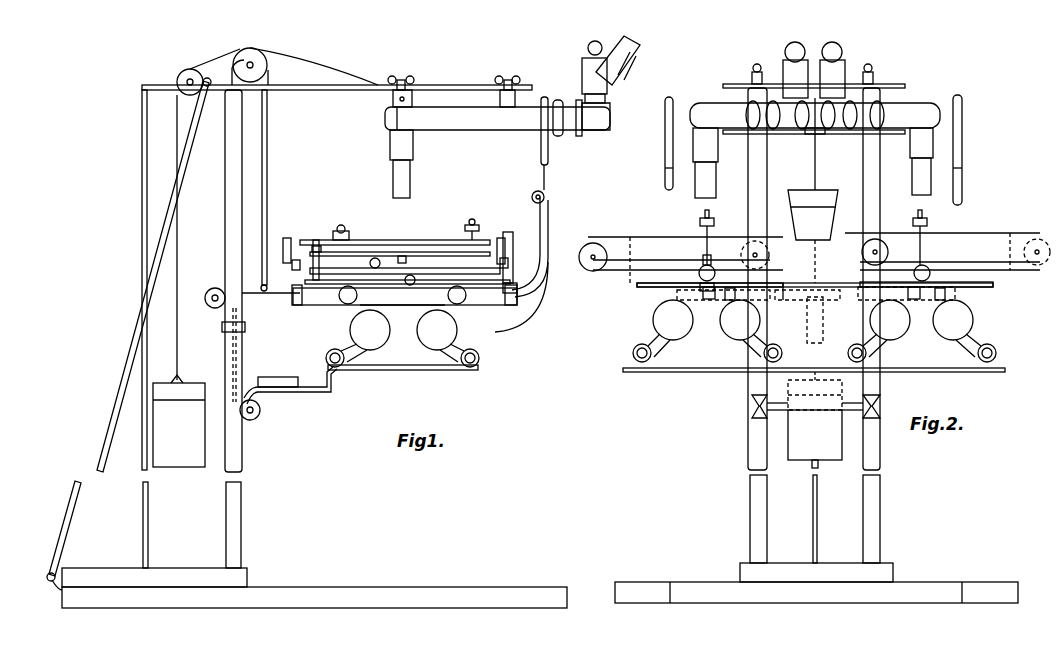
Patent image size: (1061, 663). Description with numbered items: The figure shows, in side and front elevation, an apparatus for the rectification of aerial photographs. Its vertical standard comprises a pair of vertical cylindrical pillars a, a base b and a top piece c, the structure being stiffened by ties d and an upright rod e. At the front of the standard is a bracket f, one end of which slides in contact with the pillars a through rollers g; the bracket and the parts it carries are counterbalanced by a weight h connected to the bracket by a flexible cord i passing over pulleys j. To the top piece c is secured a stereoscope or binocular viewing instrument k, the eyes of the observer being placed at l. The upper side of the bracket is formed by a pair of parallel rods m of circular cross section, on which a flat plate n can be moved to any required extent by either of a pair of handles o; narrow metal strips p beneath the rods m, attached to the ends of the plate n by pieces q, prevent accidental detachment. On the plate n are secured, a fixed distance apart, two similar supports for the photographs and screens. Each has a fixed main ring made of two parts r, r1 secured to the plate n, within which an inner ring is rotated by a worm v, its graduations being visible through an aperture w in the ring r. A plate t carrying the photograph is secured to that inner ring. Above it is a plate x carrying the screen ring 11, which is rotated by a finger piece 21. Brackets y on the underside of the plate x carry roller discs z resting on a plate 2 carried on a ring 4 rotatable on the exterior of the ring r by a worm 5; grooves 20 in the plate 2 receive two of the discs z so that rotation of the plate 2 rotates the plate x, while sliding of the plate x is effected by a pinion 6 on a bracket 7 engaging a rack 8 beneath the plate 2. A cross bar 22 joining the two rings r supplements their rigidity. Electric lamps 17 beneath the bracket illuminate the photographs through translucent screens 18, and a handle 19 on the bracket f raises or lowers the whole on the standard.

In FIG. 1, the vertical cylindrical pillars a is at (242, 356).
In FIG. 2, the vertical cylindrical pillars a is at (767, 161).
In FIG. 1, the base b is at (350, 590).
In FIG. 2, the base b is at (910, 592).
In FIG. 1, the top piece c is at (347, 90).
In FIG. 2, the top piece c is at (752, 84).
In FIG. 1, the ties d is at (119, 393).
In FIG. 1, the upright rod e is at (142, 249).
In FIG. 2, the upright rod e is at (818, 508).
In FIG. 1, the bracket f is at (331, 386).
In FIG. 2, the bracket f is at (810, 128).
In FIG. 1, the rollers g is at (209, 304).
In FIG. 2, the rollers g is at (750, 408).
In FIG. 1, the weight h is at (199, 439).
In FIG. 2, the weight h is at (842, 444).
In FIG. 1, the flexible cord i is at (177, 288).
In FIG. 2, the flexible cord i is at (816, 167).
In FIG. 1, the pulleys j is at (180, 89).
In FIG. 1, the stereoscope or binocular viewing instrument k is at (455, 126).
In FIG. 2, the stereoscope or binocular viewing instrument k is at (732, 110).
In FIG. 1, the observer's eye position l is at (611, 83).
In FIG. 2, the observer's eye position l is at (785, 46).
In FIG. 1, the rods m is at (345, 303).
In FIG. 2, the rods m is at (660, 296).
In FIG. 1, the flat plate n is at (303, 284).
In FIG. 2, the flat plate n is at (778, 300).
In FIG. 1, the handles o is at (549, 152).
In FIG. 2, the handles o is at (668, 160).
In FIG. 1, the narrow metal strips p is at (310, 305).
In FIG. 2, the narrow metal strips p is at (711, 300).
In FIG. 1, the pieces q is at (294, 300).
In FIG. 2, the pieces q is at (730, 301).
In FIG. 1, the main ring part r is at (456, 268).
In FIG. 1, the main ring part r1 is at (333, 298).
In FIG. 2, the main ring part r1 is at (676, 291).
In FIG. 1, the plate t is at (329, 240).
In FIG. 2, the plate t is at (776, 240).
In FIG. 1, the worm v is at (346, 240).
In FIG. 1, the aperture w is at (403, 256).
In FIG. 1, the plate x is at (317, 246).
In FIG. 2, the plate x is at (838, 200).
In FIG. 1, the brackets y is at (500, 238).
In FIG. 2, the brackets y is at (593, 243).
In FIG. 1, the roller discs z is at (508, 262).
In FIG. 2, the roller discs z is at (594, 268).
In FIG. 1, the plate 2 is at (311, 250).
In FIG. 2, the plate 2 is at (616, 266).
In FIG. 2, the ring 4 is at (645, 286).
In FIG. 1, the worm 5 is at (443, 278).
In FIG. 1, the pinion 6 is at (508, 305).
In FIG. 1, the bracket 7 is at (505, 254).
In FIG. 2, the bracket 7 is at (704, 248).
In FIG. 1, the rack 8 is at (530, 290).
In FIG. 2, the rack 8 is at (935, 192).
In FIG. 1, the ring 11 is at (375, 252).
In FIG. 1, the electric lamps 17 is at (402, 340).
In FIG. 2, the electric lamps 17 is at (814, 331).
In FIG. 1, the translucent screens 18 is at (406, 305).
In FIG. 1, the handle 19 is at (549, 222).
In FIG. 2, the handle 19 is at (830, 196).
In FIG. 2, the grooves 20 is at (819, 244).
In FIG. 1, the finger piece 21 is at (471, 222).
In FIG. 2, the finger piece 21 is at (714, 242).
In FIG. 2, the cross bar 22 is at (810, 293).